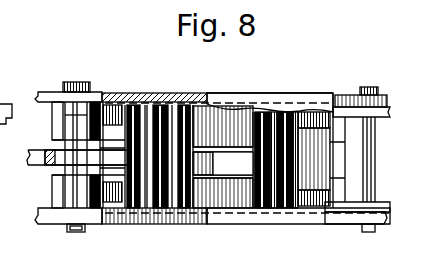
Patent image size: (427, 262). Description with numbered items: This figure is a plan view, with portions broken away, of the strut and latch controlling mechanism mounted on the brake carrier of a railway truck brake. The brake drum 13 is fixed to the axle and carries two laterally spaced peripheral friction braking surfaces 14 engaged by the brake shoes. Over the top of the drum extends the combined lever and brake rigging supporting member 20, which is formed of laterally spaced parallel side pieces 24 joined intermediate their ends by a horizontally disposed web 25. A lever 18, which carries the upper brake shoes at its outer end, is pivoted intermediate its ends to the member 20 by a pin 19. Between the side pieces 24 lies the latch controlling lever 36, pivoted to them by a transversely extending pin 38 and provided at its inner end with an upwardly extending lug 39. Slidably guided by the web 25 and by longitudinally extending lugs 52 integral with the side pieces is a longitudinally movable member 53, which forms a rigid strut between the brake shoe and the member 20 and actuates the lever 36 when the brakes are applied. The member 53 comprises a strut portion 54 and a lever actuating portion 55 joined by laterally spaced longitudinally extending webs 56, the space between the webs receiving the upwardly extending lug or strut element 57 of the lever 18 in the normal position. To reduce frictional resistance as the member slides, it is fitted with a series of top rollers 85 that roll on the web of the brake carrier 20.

The brake drum 13 is at (56, 208).
The peripheral friction braking surfaces 14 is at (52, 127).
The lever 18 is at (30, 157).
The pin 19 is at (77, 81).
The combined lever and brake rigging supporting member 20 is at (316, 98).
The side pieces 24 is at (162, 100).
The web 25 is at (243, 100).
The latch controlling lever 36 is at (6, 104).
The pin 38 is at (369, 86).
The lug 39 is at (322, 161).
The lugs 52 is at (319, 205).
The longitudinally movable member 53 is at (130, 100).
The strut portion 54 is at (174, 110).
The lever actuating portion 55 is at (273, 110).
The webs 56 is at (213, 112).
The lug or strut element 57 is at (215, 161).
The top rollers 85 is at (168, 208).